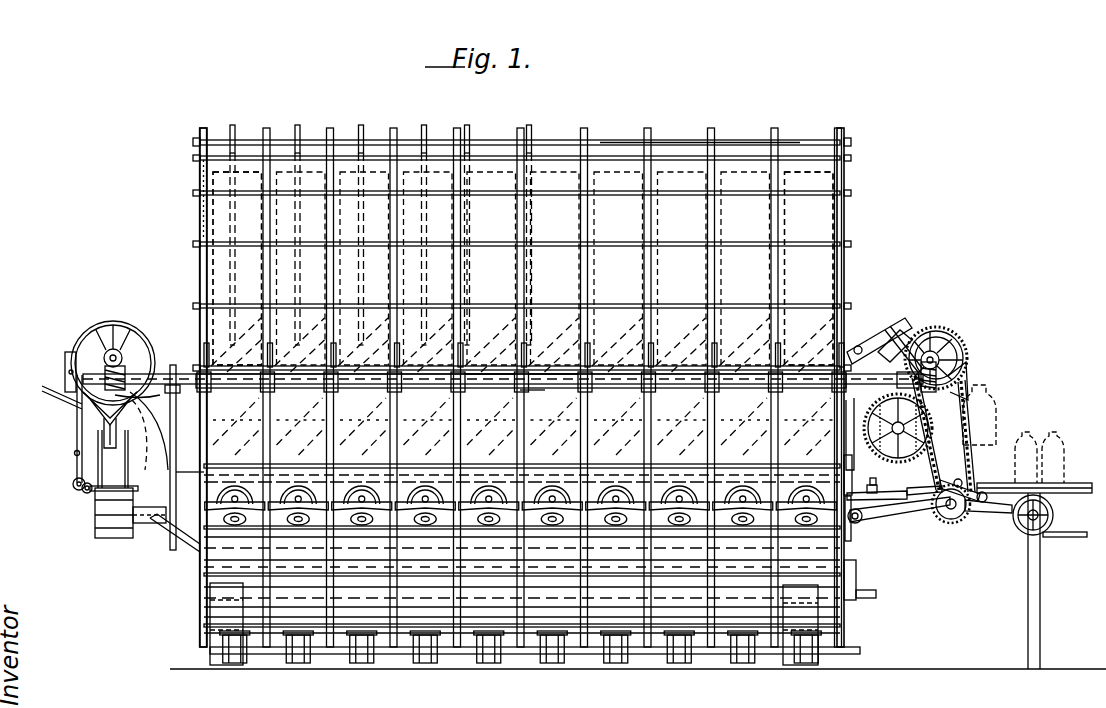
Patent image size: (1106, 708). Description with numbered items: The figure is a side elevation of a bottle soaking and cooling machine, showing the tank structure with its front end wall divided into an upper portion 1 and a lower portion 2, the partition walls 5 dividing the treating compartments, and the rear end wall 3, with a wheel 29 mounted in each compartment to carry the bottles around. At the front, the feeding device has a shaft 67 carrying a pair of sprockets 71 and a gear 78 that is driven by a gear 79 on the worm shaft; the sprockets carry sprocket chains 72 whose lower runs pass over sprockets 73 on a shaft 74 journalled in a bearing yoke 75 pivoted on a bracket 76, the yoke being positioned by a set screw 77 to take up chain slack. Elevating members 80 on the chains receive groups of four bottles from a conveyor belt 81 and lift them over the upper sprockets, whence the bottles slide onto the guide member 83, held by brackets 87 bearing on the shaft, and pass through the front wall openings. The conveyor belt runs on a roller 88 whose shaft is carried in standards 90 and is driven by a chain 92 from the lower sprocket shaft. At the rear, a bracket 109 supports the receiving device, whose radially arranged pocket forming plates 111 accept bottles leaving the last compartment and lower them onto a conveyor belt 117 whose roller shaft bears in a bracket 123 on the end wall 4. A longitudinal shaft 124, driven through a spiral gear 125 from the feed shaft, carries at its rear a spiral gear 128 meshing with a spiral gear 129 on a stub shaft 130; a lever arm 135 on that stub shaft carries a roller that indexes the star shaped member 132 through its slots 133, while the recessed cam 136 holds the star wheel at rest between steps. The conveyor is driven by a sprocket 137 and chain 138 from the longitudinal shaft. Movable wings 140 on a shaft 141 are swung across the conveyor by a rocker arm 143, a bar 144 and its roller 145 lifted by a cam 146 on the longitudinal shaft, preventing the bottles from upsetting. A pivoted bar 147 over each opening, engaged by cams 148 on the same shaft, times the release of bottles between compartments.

The upper portion of the front end wall 1 is at (845, 219).
The lower portion of the front end wall 2 is at (846, 556).
The rear end wall 3 is at (199, 208).
The end wall 4 is at (209, 590).
The partition walls 5 is at (716, 140).
The wheel 29 is at (215, 272).
The shaft 67 is at (933, 327).
The sprockets 71 is at (966, 356).
The sprocket chains 72 is at (970, 480).
The sprockets 73 is at (946, 488).
The shaft 74 is at (950, 525).
The bearing yoke 75 is at (905, 517).
The bracket 76 is at (848, 534).
The set screw 77 is at (877, 490).
The gear 78 is at (962, 338).
The gear 79 is at (880, 455).
The elevating members 80 is at (984, 420).
The conveyor belt 81 is at (1075, 483).
The guide member 83 is at (876, 345).
The brackets 87 is at (905, 346).
The roller 88 is at (1045, 527).
The standards 90 is at (1030, 583).
The chain 92 is at (1002, 512).
The bracket 109 is at (166, 366).
The pocket forming plates 111 is at (78, 378).
The conveyor belt 117 is at (95, 532).
The bracket 123 is at (150, 530).
The shaft 124 is at (482, 372).
The spiral gear 125 is at (940, 386).
The spiral gear 128 is at (125, 356).
The spiral gear 129 is at (113, 348).
The stub shaft 130 is at (108, 332).
The star shaped member 132 is at (105, 427).
The slots 133 is at (148, 432).
The lever arm 135 is at (78, 400).
The cam 136 is at (86, 330).
The sprocket 137 is at (172, 542).
The chain 138 is at (186, 470).
The movable wings 140 is at (97, 462).
The shaft 141 is at (86, 493).
The rocker arm 143 is at (82, 489).
The bar 144 is at (75, 430).
The roller 145 is at (68, 352).
The cam 146 is at (68, 370).
The bar 147 is at (556, 375).
The cams 148 is at (528, 398).